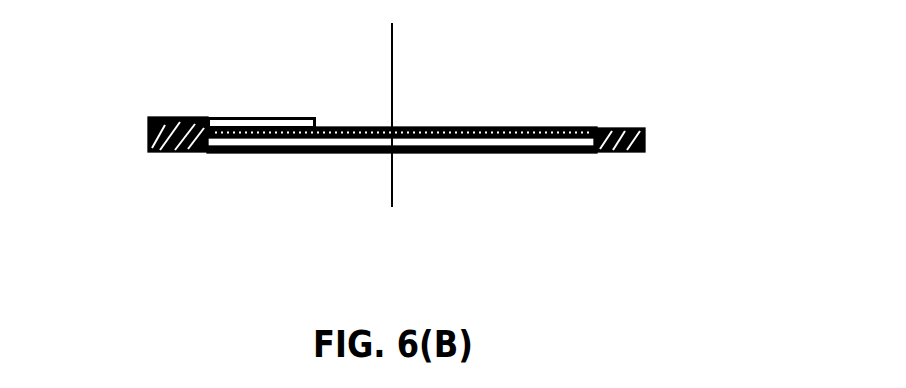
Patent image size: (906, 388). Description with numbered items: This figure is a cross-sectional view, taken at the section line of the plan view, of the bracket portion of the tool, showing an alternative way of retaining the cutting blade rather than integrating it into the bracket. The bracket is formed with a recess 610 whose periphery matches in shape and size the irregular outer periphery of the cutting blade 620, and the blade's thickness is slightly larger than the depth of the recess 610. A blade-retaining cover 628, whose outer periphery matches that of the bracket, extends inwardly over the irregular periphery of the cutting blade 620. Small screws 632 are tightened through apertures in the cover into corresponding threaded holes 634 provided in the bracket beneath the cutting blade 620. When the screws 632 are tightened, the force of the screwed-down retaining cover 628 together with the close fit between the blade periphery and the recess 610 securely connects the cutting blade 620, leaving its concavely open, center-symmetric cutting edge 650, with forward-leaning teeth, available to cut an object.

The recess 610 is at (193, 151).
The cutting blade 620 is at (568, 127).
The blade-retaining cover 628 is at (243, 117).
The small screws 632 is at (174, 117).
The threaded holes 634 is at (620, 128).
The cutting edge 650 is at (368, 127).